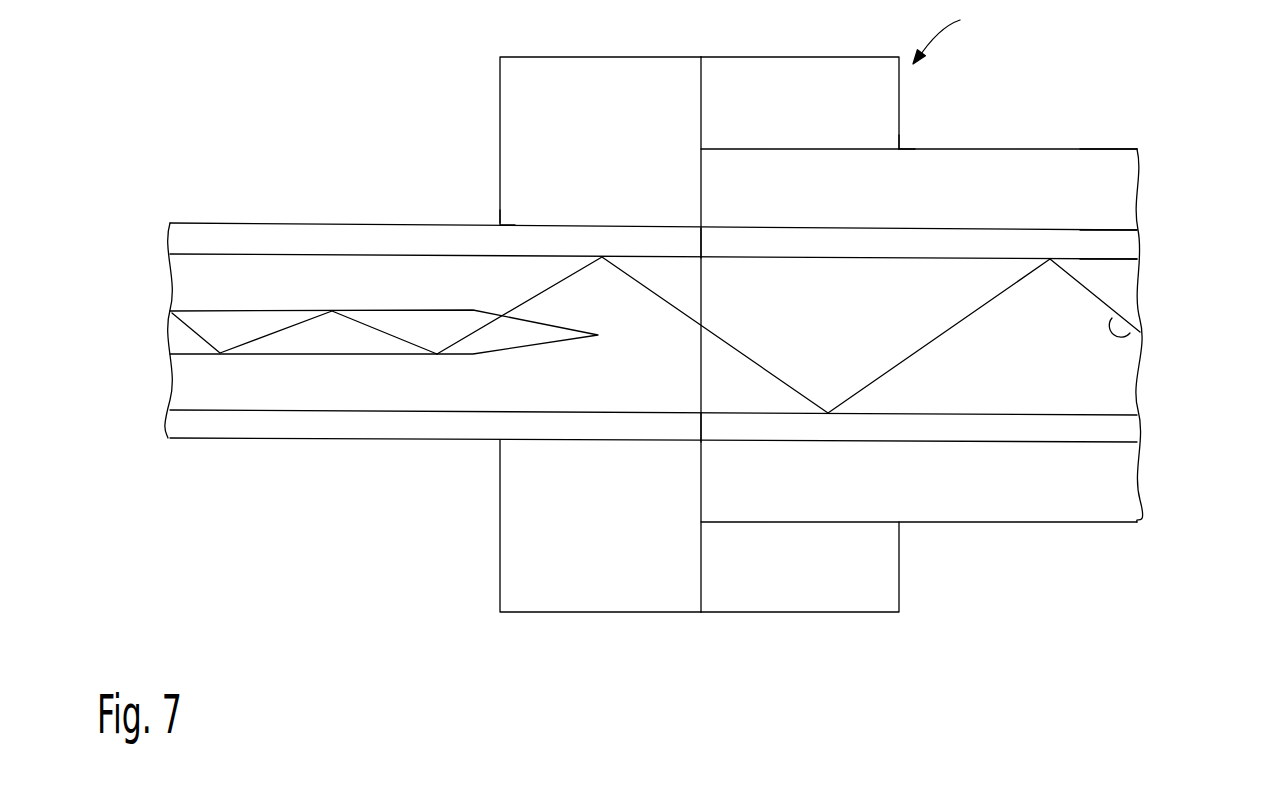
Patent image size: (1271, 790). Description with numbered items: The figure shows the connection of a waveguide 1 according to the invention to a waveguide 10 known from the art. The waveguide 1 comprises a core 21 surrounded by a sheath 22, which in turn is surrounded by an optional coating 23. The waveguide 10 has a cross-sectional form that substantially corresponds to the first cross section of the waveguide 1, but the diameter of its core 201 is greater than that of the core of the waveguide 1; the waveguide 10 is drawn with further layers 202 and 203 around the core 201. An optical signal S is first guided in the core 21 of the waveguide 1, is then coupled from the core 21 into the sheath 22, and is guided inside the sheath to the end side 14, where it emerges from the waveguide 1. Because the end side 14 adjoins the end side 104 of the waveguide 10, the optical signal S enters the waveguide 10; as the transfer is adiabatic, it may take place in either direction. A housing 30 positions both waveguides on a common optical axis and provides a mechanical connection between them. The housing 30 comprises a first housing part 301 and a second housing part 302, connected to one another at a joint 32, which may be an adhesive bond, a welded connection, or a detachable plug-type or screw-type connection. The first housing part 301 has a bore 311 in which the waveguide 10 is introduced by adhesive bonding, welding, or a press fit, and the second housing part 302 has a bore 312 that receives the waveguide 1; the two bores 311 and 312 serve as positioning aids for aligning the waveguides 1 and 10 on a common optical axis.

The waveguide 1 is at (233, 440).
The waveguide 10 is at (965, 525).
The end side 14 is at (700, 428).
The core 21 is at (185, 332).
The sheath 22 is at (330, 392).
The coating 23 is at (293, 240).
The housing 30 is at (949, 34).
The joint 32 is at (700, 172).
The end side 104 is at (702, 242).
The core 201 is at (1115, 288).
The intermediate layer 202 is at (1115, 245).
The top layer 203 is at (1115, 185).
The first housing part 301 is at (880, 85).
The second housing part 302 is at (515, 142).
The bore 311 is at (900, 149).
The bore 312 is at (500, 227).
The optical signal S is at (1140, 330).